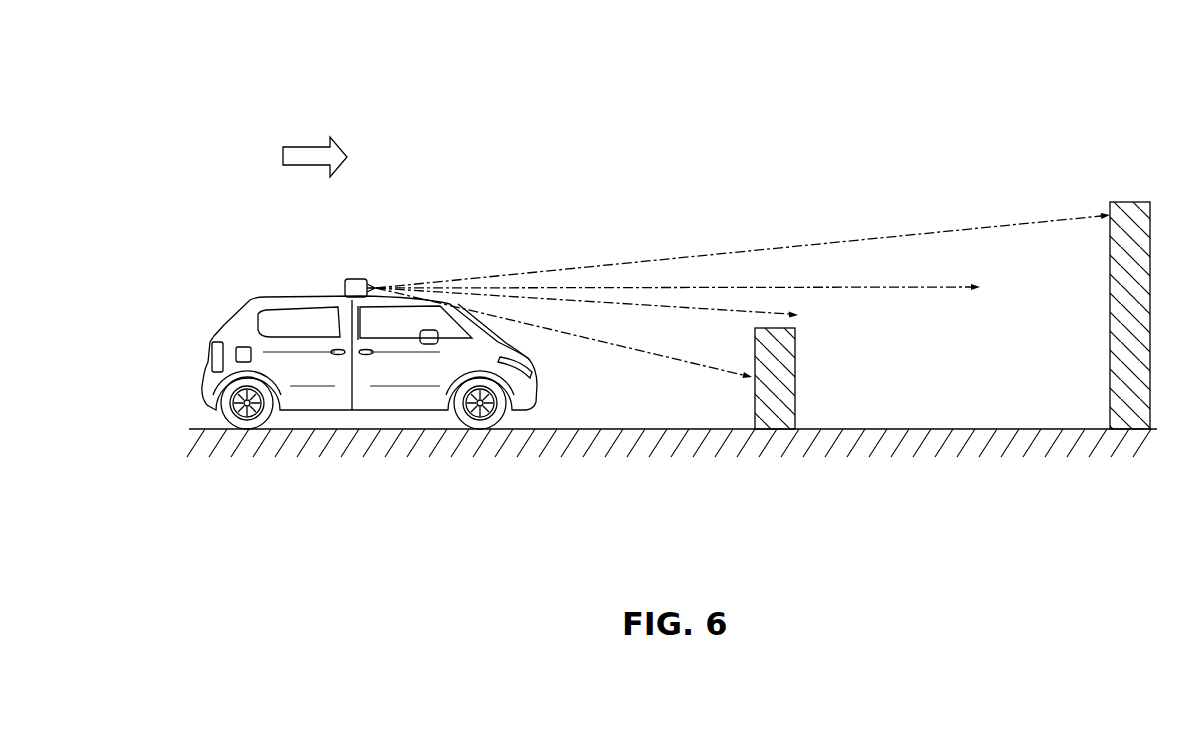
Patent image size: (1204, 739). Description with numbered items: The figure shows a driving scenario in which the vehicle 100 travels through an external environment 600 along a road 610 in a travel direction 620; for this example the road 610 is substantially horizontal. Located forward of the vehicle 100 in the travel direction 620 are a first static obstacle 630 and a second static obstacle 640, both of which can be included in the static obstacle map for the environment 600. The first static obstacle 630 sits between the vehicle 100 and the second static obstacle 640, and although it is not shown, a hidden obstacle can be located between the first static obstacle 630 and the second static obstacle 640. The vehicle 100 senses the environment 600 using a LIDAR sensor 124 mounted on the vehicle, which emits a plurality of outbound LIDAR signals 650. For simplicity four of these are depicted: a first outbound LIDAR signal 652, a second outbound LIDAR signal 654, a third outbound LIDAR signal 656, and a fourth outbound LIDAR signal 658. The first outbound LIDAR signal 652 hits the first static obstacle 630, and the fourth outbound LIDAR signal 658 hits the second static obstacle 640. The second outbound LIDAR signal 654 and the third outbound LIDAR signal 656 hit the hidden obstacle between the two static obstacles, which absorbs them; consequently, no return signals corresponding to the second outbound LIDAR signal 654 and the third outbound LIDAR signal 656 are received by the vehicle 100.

The environment 600 is at (668, 30).
The travel direction 620 is at (309, 147).
The vehicle 100 is at (277, 258).
The LIDAR sensor 124 is at (353, 279).
The road 610 is at (199, 420).
The outbound LIDAR signals 650 is at (743, 278).
The first outbound LIDAR signal 652 is at (622, 349).
The second outbound LIDAR signal 654 is at (677, 307).
The third outbound LIDAR signal 656 is at (903, 288).
The fourth outbound LIDAR signal 658 is at (1010, 218).
The first static obstacle 630 is at (798, 388).
The second static obstacle 640 is at (1108, 395).